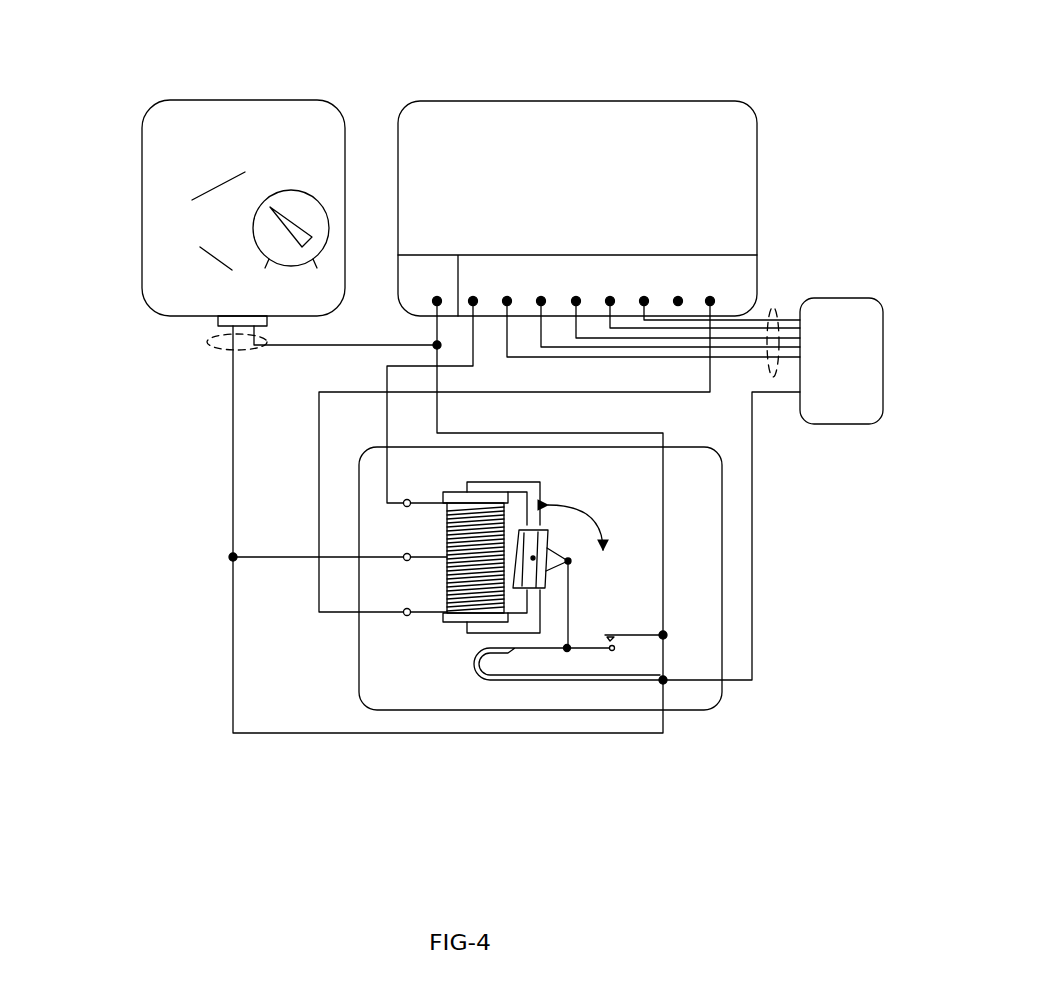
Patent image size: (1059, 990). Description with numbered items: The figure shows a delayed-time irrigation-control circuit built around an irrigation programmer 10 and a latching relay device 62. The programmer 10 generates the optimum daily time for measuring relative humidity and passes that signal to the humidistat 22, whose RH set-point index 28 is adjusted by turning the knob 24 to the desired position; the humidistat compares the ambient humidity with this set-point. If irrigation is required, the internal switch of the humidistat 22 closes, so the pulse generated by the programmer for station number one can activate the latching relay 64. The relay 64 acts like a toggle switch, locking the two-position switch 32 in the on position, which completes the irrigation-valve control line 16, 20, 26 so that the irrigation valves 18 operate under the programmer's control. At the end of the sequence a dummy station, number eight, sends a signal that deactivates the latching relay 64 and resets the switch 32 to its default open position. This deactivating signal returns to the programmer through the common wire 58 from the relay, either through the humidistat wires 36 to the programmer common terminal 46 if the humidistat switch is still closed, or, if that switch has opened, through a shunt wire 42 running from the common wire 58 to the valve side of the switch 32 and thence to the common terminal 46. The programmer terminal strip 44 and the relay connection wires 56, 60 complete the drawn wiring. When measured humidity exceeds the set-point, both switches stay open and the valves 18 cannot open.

The irrigation programmer 10 is at (640, 100).
The terminal strip 44 is at (733, 272).
The programmer common terminal 46 is at (437, 268).
The irrigation-valve control line 16 is at (772, 310).
The irrigation valves 18 is at (845, 298).
The humidistat 22 is at (140, 292).
The knob 24 is at (303, 190).
The RH set-point index 28 is at (148, 211).
The humidistat wires 36 is at (205, 348).
The close wire 56 is at (387, 417).
The common wire 58 is at (273, 557).
The open wire 60 is at (319, 593).
The irrigation-valve control line 20 is at (755, 497).
The irrigation-valve control line 26 is at (585, 434).
The two-position switch 32 is at (637, 638).
The latching relay device 62 is at (717, 703).
The shunt wire 42 is at (527, 733).
The latching relay 64 is at (478, 637).